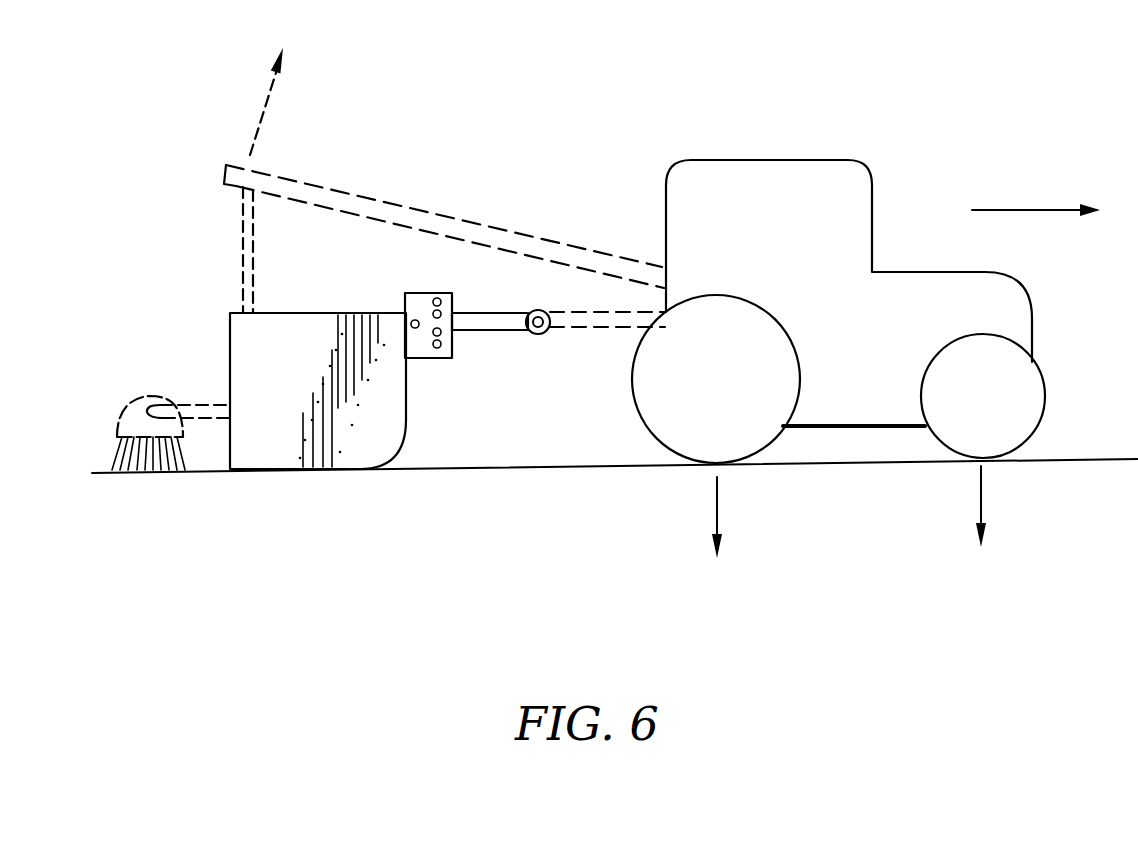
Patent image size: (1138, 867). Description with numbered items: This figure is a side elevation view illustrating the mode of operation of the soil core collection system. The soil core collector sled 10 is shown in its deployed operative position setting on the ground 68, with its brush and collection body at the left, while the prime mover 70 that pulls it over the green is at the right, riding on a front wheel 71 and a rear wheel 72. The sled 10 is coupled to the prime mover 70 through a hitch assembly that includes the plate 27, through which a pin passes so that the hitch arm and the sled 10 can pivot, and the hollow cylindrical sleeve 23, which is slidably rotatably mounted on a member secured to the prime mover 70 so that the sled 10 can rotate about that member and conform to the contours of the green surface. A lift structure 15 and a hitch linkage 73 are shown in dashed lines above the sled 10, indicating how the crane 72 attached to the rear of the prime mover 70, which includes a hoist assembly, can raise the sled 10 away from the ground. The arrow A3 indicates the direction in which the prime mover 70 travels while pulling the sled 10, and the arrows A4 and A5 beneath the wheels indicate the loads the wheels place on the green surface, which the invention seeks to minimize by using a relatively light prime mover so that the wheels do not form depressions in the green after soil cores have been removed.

The soil core collector sled 10 is at (438, 434).
The lift frame with dump arrow 15 is at (243, 242).
The hollow cylindrical sleeve 23 is at (540, 334).
The plate 27 is at (410, 293).
The ground surface 68 is at (479, 470).
The prime mover 70 is at (728, 146).
The front wheel 71 is at (728, 310).
The crane 72 is at (477, 222).
The hitch linkage 73 is at (573, 311).
The direction of travel arrow A3 is at (1027, 210).
The front axle load arrow A4 is at (718, 490).
The rear axle load arrow A5 is at (983, 507).